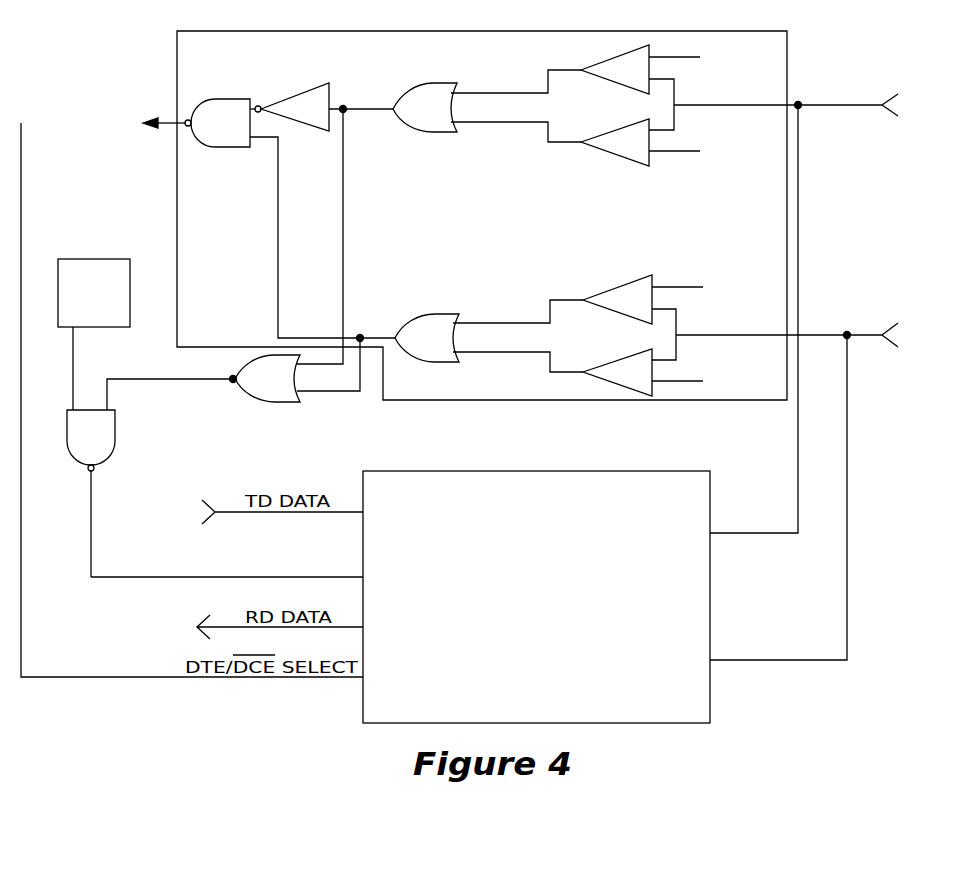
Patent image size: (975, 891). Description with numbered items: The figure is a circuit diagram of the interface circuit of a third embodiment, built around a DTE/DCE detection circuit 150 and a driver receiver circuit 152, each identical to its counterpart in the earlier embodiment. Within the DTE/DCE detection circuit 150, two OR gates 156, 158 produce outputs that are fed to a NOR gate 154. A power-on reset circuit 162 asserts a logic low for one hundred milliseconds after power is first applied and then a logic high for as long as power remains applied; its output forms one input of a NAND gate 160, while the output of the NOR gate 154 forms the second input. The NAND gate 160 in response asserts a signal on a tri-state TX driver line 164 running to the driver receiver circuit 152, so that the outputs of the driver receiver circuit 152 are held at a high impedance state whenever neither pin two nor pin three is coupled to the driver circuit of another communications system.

The DTE/DCE detection circuit 150 is at (537, 215).
The driver receiver circuit 152 is at (710, 690).
The NOR gate 154 is at (282, 402).
The OR gate 156 is at (433, 83).
The OR gate 158 is at (435, 314).
The NAND gate 160 is at (115, 440).
The power-on reset circuit 162 is at (107, 258).
The tri-state TX driver line 164 is at (157, 577).